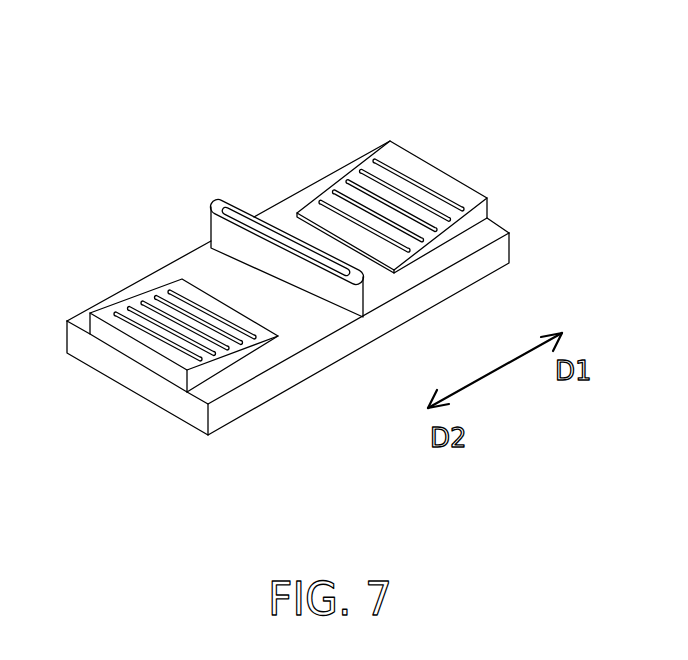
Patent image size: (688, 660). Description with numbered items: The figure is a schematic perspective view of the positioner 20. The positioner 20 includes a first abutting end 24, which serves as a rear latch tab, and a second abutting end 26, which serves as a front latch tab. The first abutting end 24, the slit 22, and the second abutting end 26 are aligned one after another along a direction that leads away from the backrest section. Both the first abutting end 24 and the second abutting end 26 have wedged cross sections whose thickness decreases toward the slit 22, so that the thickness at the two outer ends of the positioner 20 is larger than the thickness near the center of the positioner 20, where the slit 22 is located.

The positioner 20 is at (274, 219).
The slit 22 is at (241, 212).
The first abutting end 24 is at (418, 173).
The second abutting end 26 is at (128, 306).